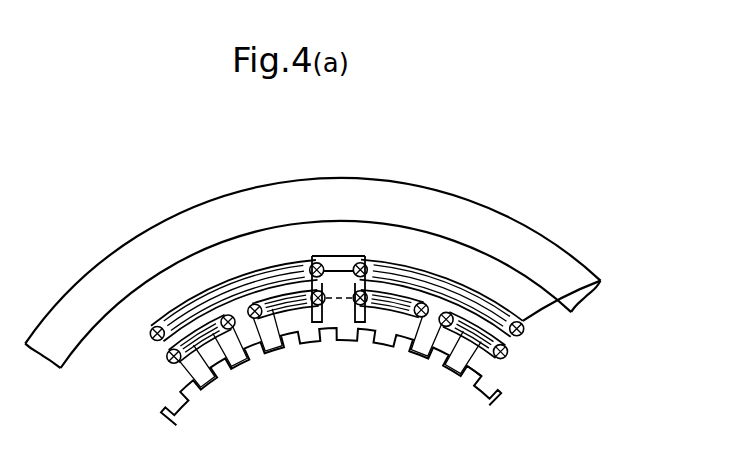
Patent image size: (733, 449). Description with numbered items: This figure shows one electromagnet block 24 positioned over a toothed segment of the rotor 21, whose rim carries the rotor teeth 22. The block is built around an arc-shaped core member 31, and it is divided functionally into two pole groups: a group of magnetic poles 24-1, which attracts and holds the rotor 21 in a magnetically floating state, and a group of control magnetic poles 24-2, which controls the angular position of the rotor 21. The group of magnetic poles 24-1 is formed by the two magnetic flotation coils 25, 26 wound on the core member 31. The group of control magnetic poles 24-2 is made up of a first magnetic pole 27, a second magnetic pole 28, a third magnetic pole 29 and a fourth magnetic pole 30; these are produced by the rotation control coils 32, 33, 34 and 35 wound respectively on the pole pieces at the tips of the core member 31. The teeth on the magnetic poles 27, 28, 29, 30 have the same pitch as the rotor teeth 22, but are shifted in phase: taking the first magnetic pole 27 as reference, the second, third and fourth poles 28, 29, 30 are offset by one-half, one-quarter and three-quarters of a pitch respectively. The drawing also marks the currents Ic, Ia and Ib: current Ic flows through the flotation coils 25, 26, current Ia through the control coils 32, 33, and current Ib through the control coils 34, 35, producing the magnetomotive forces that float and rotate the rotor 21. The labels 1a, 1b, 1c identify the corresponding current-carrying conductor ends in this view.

The electromagnet block 24 is at (490, 124).
The group of magnetic poles 24-1 is at (525, 332).
The group of control magnetic poles 24-2 is at (538, 365).
The rotor 21 is at (440, 424).
The teeth 22 is at (487, 378).
The magnetic flotation coil 25 is at (248, 298).
The magnetic flotation coil 26 is at (463, 310).
The first magnetic pole 27 is at (190, 322).
The second magnetic pole 28 is at (293, 293).
The third magnetic pole 29 is at (400, 292).
The fourth magnetic pole 30 is at (490, 302).
The core member 31 is at (357, 240).
The rotation control coil 32 is at (222, 356).
The rotation control coil 33 is at (290, 318).
The rotation control coil 34 is at (390, 296).
The rotation control coil 35 is at (465, 336).
The conductor end 1a is at (178, 362).
The conductor end 1b is at (510, 352).
The conductor end 1c is at (157, 342).